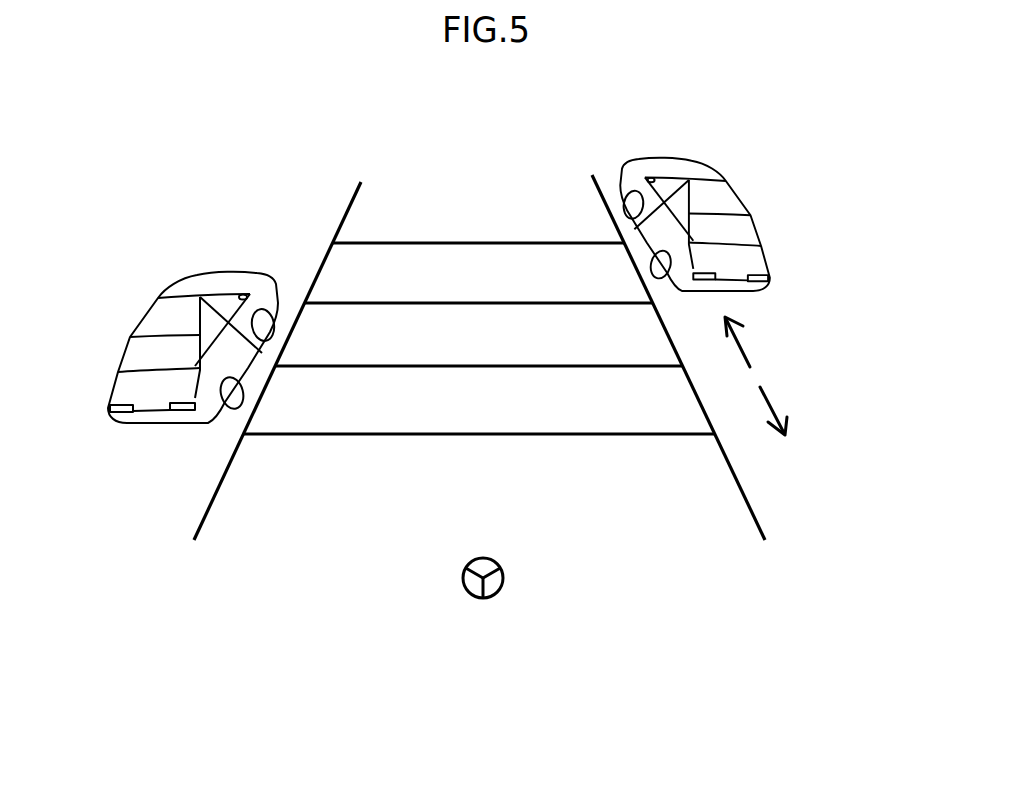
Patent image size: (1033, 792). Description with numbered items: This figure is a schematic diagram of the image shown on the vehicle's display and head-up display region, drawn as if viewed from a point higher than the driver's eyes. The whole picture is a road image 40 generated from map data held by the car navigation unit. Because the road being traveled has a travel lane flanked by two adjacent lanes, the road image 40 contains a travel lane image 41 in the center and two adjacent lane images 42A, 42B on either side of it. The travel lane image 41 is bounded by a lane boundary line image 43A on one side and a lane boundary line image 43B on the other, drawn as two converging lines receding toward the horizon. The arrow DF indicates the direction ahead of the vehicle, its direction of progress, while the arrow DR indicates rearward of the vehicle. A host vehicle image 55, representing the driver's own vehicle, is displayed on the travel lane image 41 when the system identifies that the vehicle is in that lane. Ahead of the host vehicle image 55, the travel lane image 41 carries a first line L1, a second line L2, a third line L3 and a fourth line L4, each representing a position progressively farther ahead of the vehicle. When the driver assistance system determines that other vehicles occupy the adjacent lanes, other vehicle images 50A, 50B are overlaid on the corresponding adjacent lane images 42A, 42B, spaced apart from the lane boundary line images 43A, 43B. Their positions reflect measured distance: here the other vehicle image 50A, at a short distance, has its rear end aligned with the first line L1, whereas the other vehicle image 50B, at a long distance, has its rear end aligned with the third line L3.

The road image 40 is at (740, 530).
The travel lane image 41 is at (722, 500).
The adjacent lane image 42A is at (162, 460).
The adjacent lane image 42B is at (815, 452).
The lane boundary line image 43A is at (345, 210).
The lane boundary line image 43B is at (725, 458).
The other vehicle image 50A is at (162, 315).
The other vehicle image 50B is at (723, 193).
The host vehicle image 55 is at (492, 600).
The first line L1 is at (483, 432).
The second line L2 is at (483, 364).
The third line L3 is at (483, 301).
The fourth line L4 is at (483, 241).
The arrow indicating ahead of the vehicle DF is at (743, 342).
The arrow indicating rearward of the vehicle DR is at (775, 403).